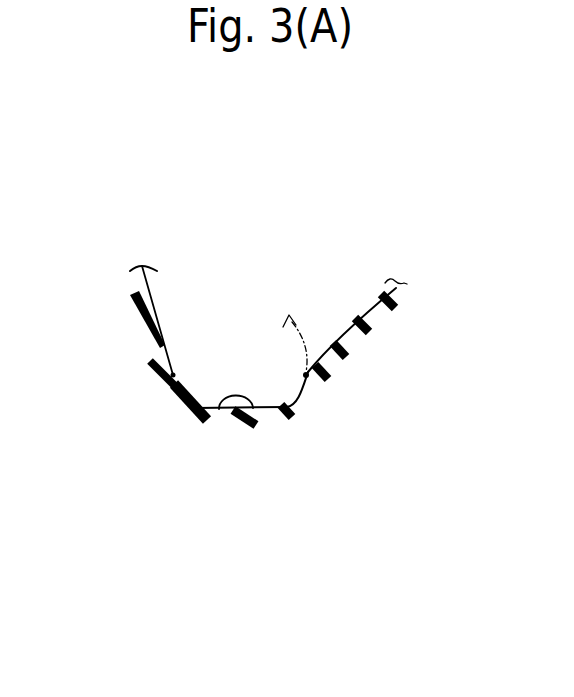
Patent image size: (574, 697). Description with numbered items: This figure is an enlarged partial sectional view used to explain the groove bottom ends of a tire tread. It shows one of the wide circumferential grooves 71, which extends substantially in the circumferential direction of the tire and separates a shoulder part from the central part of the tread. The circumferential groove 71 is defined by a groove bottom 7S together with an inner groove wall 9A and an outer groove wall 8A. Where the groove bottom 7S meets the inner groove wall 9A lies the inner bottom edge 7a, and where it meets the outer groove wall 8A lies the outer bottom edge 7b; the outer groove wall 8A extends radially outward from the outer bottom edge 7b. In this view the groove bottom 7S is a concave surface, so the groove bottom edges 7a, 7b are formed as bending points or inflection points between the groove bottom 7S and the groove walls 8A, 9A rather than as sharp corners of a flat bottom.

The outer groove wall 8A is at (153, 305).
The inner groove wall 9A is at (356, 316).
The circumferential groove 71 is at (238, 313).
The inner bottom edge 7a is at (308, 377).
The outer bottom edge 7b is at (173, 375).
The groove bottom 7S is at (253, 421).